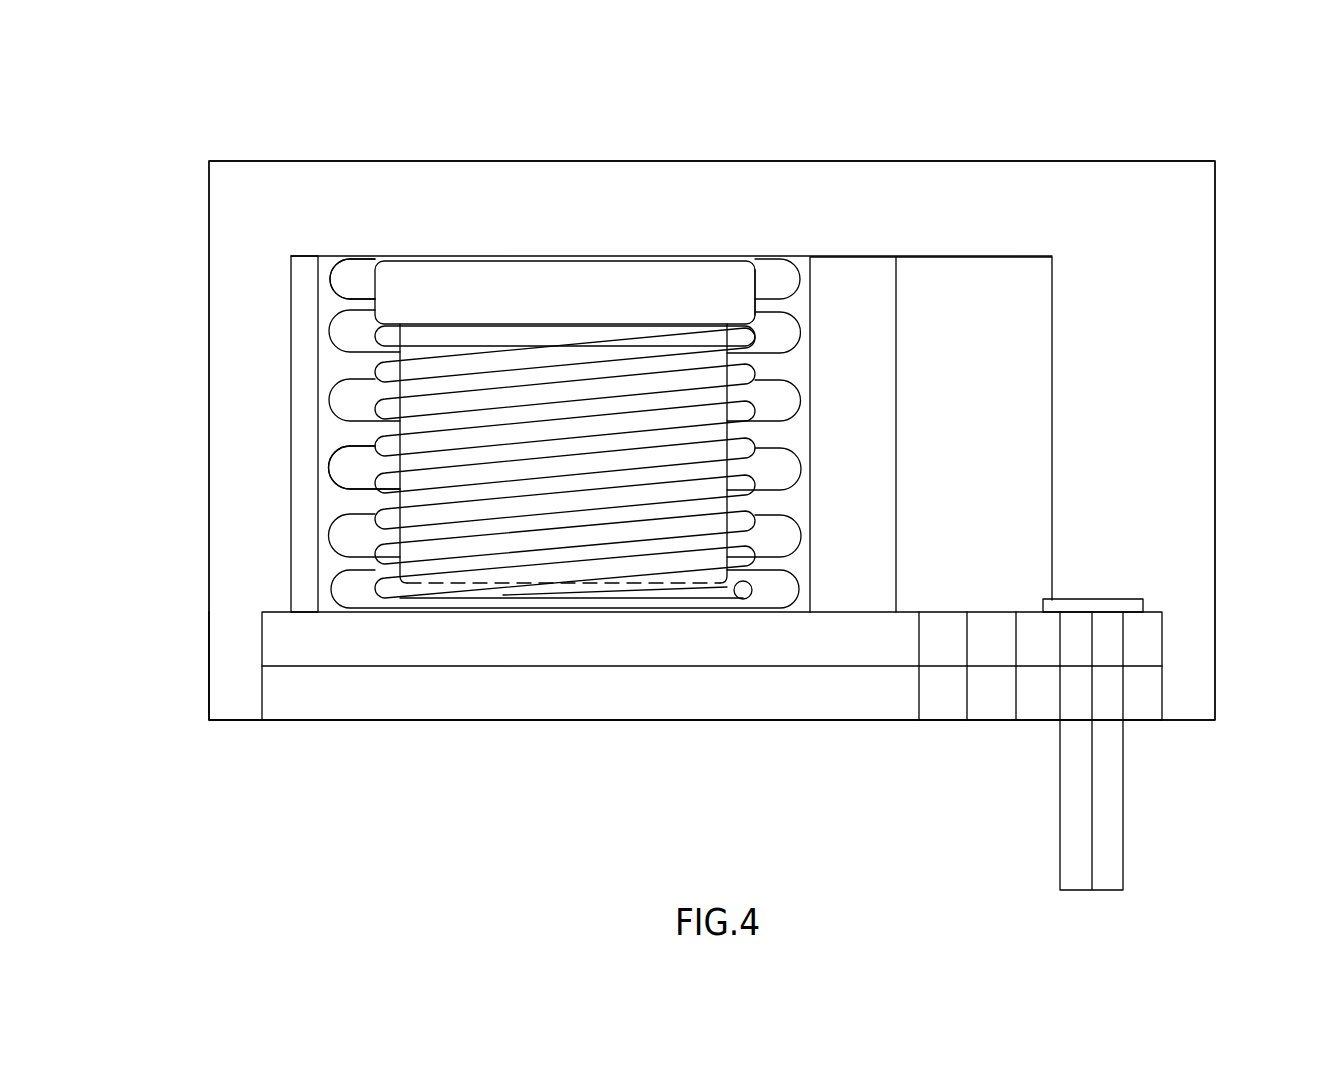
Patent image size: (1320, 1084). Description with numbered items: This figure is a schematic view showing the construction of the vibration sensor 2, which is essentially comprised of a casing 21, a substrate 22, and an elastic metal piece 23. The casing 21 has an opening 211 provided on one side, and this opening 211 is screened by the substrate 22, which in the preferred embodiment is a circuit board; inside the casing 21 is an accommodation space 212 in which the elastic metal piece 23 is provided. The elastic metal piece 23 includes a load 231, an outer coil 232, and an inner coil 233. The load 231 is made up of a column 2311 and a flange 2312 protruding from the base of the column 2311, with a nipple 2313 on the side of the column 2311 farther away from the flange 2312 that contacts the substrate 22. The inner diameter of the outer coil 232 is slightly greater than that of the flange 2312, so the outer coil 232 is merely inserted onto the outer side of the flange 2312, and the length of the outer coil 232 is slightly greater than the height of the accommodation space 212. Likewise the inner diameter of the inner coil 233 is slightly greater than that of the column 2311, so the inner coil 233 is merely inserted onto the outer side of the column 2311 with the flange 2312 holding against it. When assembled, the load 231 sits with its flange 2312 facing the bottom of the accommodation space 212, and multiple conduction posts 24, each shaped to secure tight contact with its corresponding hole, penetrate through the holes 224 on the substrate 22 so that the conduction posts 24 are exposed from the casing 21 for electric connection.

The vibration sensor 2 is at (886, 161).
The casing 21 is at (375, 177).
The opening 211 is at (262, 680).
The accommodation space 212 is at (322, 373).
The substrate 22 is at (282, 648).
The holes 224 is at (1065, 643).
The elastic metal piece 23 is at (459, 426).
The load 231 is at (497, 260).
The column 2311 is at (606, 370).
The flange 2312 is at (738, 270).
The nipple 2313 is at (565, 588).
The outer coil 232 is at (347, 265).
The inner coil 233 is at (385, 487).
The conduction posts 24 is at (1075, 812).